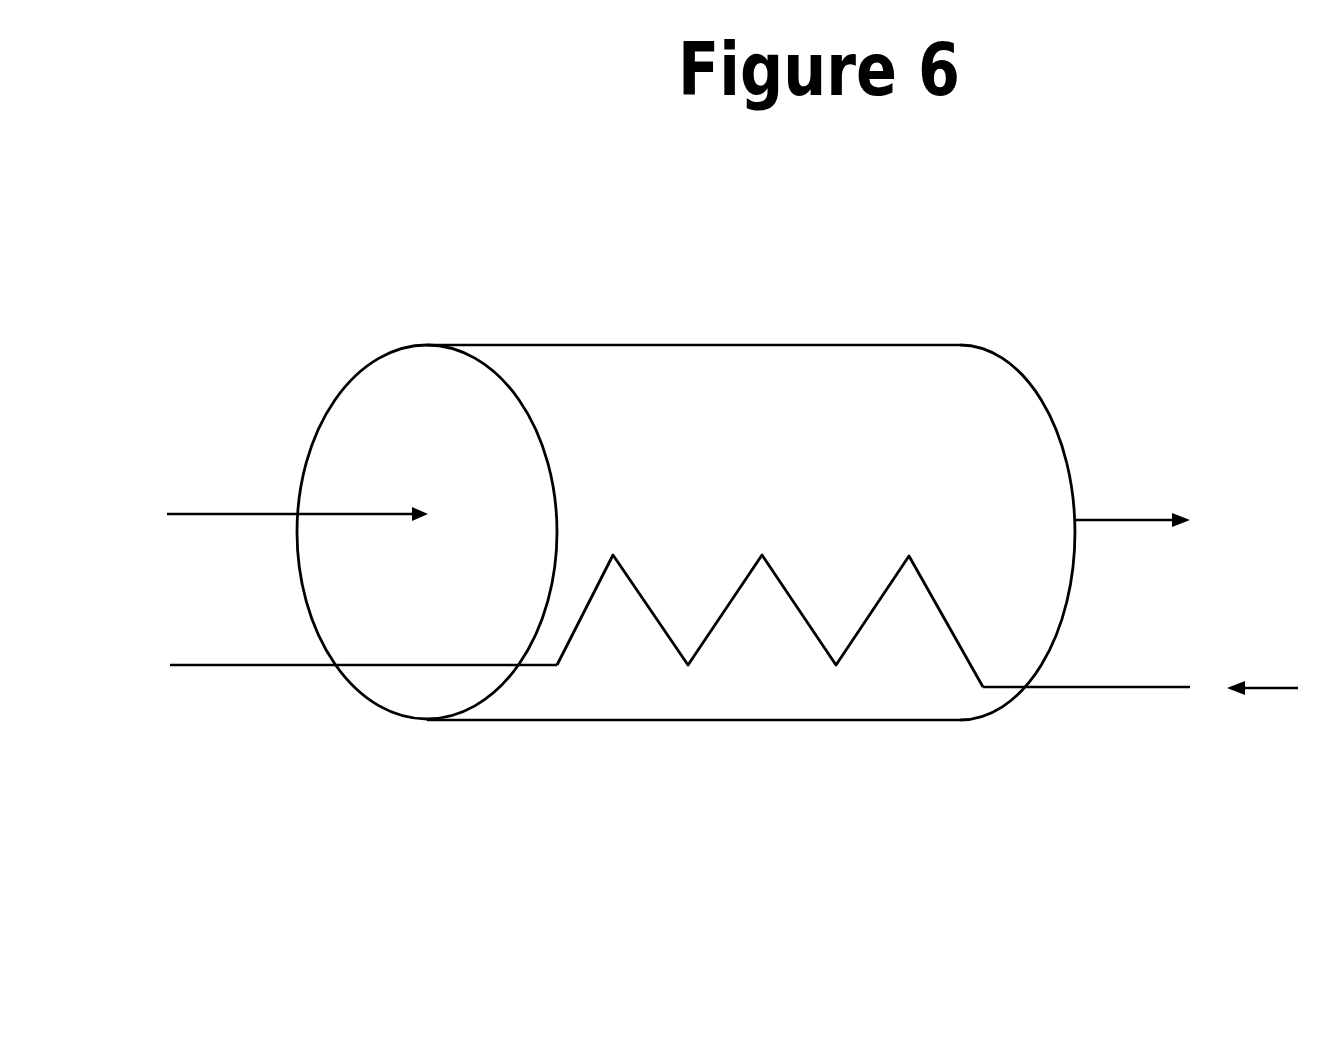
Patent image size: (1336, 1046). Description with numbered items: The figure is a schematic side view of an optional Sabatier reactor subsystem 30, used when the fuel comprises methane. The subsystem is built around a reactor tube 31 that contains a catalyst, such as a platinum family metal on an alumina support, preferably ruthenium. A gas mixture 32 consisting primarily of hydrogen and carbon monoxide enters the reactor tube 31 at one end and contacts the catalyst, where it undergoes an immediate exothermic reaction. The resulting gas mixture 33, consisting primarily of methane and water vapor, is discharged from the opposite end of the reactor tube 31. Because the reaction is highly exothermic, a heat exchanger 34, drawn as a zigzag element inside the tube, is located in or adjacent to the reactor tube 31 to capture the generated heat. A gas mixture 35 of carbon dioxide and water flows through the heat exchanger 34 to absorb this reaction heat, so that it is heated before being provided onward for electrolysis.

The Sabatier reactor subsystem 30 is at (678, 447).
The reactor tube 31 is at (743, 460).
The gas mixture 32 is at (257, 513).
The gas mixture 33 is at (1130, 518).
The heat exchanger 34 is at (792, 610).
The gas mixture 35 is at (1260, 690).